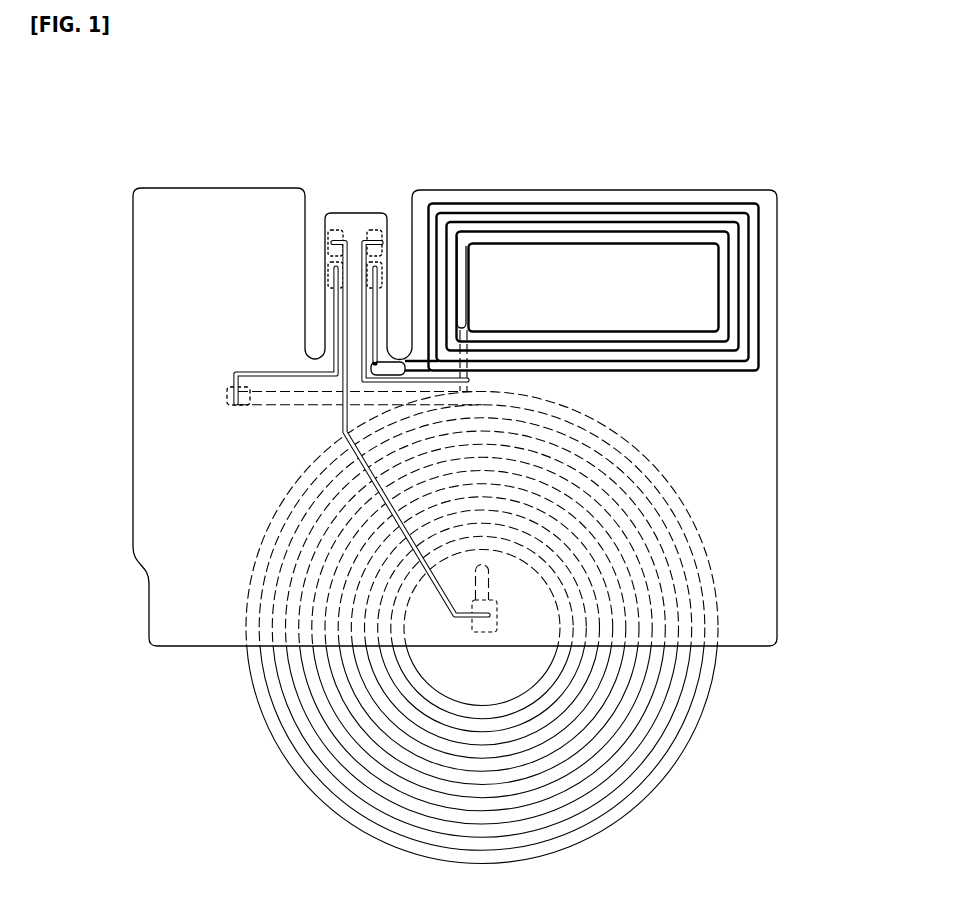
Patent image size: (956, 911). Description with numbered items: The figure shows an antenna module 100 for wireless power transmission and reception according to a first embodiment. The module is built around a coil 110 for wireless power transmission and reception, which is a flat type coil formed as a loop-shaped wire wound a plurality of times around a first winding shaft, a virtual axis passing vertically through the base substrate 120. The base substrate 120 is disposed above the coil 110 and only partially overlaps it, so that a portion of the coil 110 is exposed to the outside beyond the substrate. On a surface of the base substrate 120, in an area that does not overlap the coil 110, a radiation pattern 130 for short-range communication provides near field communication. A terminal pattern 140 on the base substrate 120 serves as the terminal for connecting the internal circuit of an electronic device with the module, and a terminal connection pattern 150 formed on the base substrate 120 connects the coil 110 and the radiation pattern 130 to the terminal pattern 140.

The antenna module for wireless power transmission and reception 100 is at (163, 108).
The coil for wireless power transmission and reception 110 is at (705, 708).
The base substrate 120 is at (777, 433).
The radiation pattern for short-range communication 130 is at (777, 280).
The terminal pattern 140 is at (331, 234).
The terminal connection pattern 150 is at (233, 378).